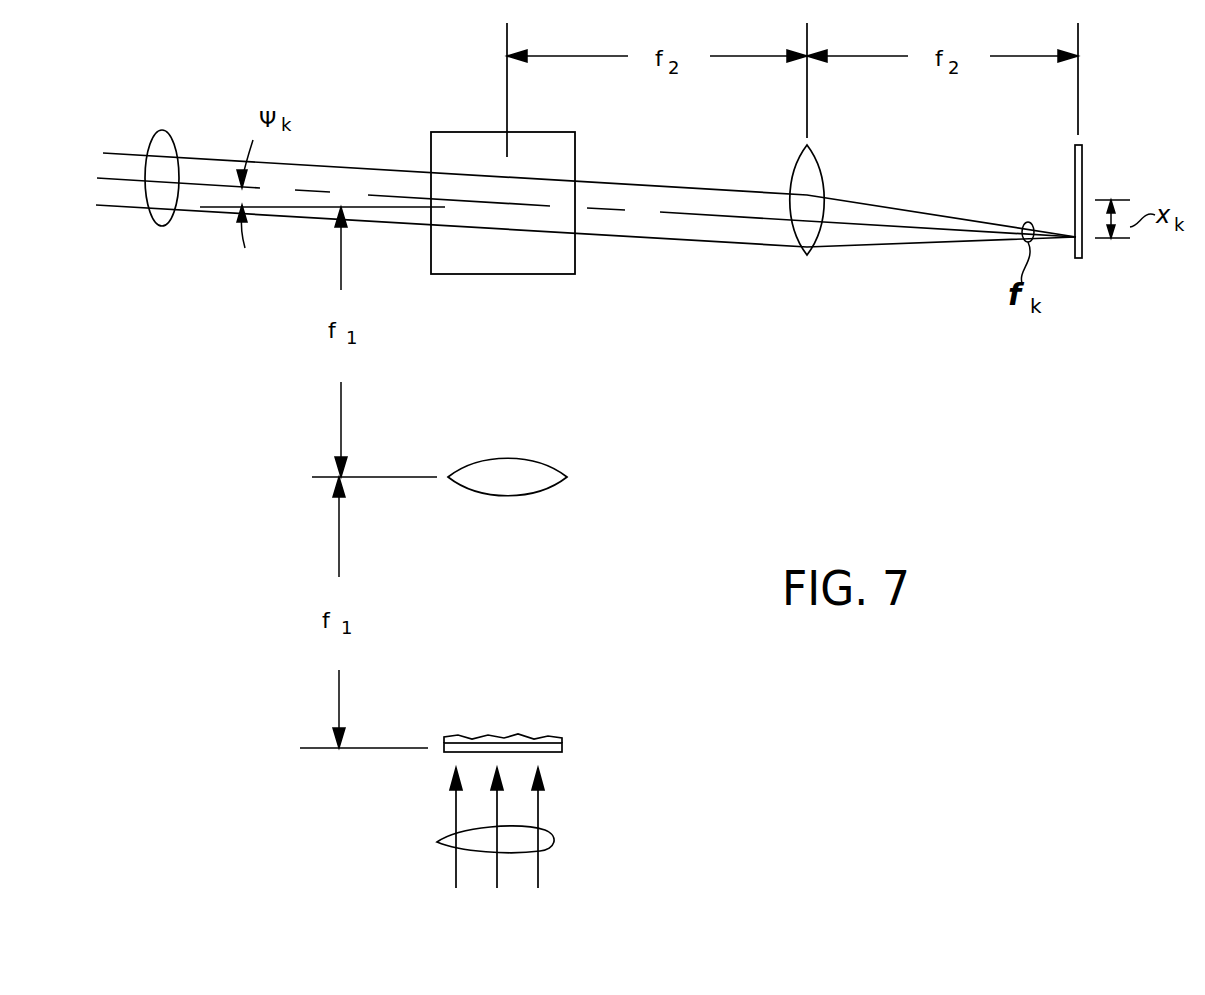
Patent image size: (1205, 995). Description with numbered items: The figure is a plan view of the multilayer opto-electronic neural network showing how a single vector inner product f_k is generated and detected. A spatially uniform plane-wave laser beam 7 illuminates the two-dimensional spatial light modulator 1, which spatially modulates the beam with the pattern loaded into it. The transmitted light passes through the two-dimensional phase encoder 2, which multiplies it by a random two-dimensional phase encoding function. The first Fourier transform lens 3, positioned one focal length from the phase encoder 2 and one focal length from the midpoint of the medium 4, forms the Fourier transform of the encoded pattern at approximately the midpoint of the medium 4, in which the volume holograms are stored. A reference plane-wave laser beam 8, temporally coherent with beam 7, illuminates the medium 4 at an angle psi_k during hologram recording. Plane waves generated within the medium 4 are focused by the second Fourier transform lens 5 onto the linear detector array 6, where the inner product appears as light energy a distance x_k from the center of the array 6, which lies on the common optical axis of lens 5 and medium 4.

The spatial light modulator 1 is at (562, 750).
The phase encoder 2 is at (562, 738).
The first Fourier transform lens 3 is at (555, 488).
The medium 4 is at (580, 254).
The second Fourier transform lens 5 is at (812, 252).
The linear detector array 6 is at (1083, 250).
The plane-wave laser beam 7 is at (437, 842).
The reference plane-wave laser beam 8 is at (157, 132).